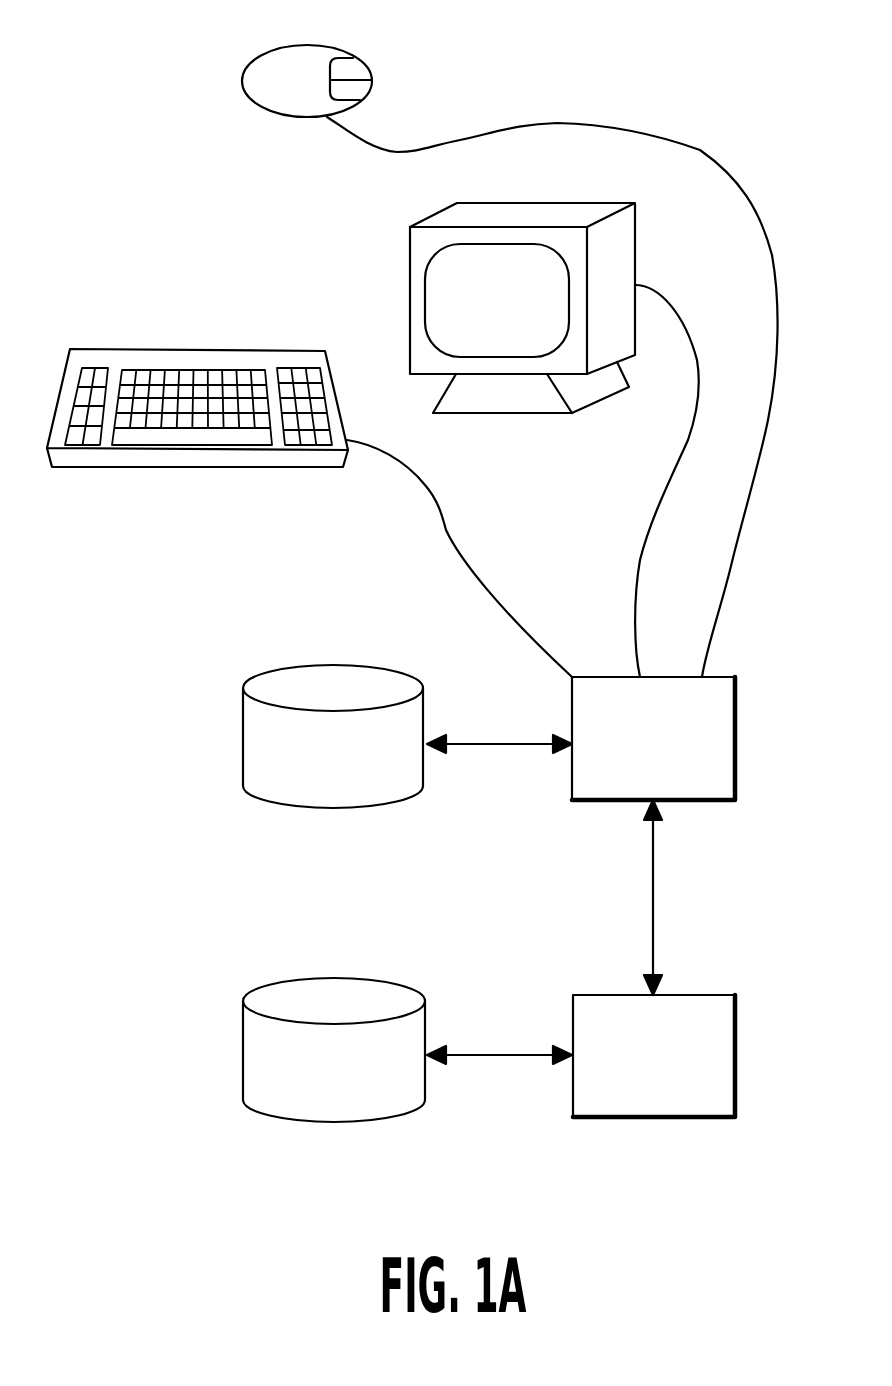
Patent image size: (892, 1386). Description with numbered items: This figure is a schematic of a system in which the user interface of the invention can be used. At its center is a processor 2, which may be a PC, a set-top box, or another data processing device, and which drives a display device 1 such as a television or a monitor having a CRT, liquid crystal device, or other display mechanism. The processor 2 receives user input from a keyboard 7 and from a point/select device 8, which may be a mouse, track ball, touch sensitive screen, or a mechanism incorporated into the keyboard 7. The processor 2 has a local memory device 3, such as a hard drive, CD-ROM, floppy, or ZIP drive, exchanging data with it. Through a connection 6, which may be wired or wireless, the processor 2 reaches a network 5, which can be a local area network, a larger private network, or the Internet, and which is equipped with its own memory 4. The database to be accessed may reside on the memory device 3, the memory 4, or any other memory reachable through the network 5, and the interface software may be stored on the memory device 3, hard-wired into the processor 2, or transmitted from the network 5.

The display device 1 is at (410, 259).
The processor 2 is at (723, 733).
The local memory device 3 is at (278, 678).
The memory 4 is at (278, 1003).
The network 5 is at (717, 1090).
The connection 6 is at (654, 903).
The keyboard 7 is at (165, 349).
The point/select device 8 is at (247, 62).